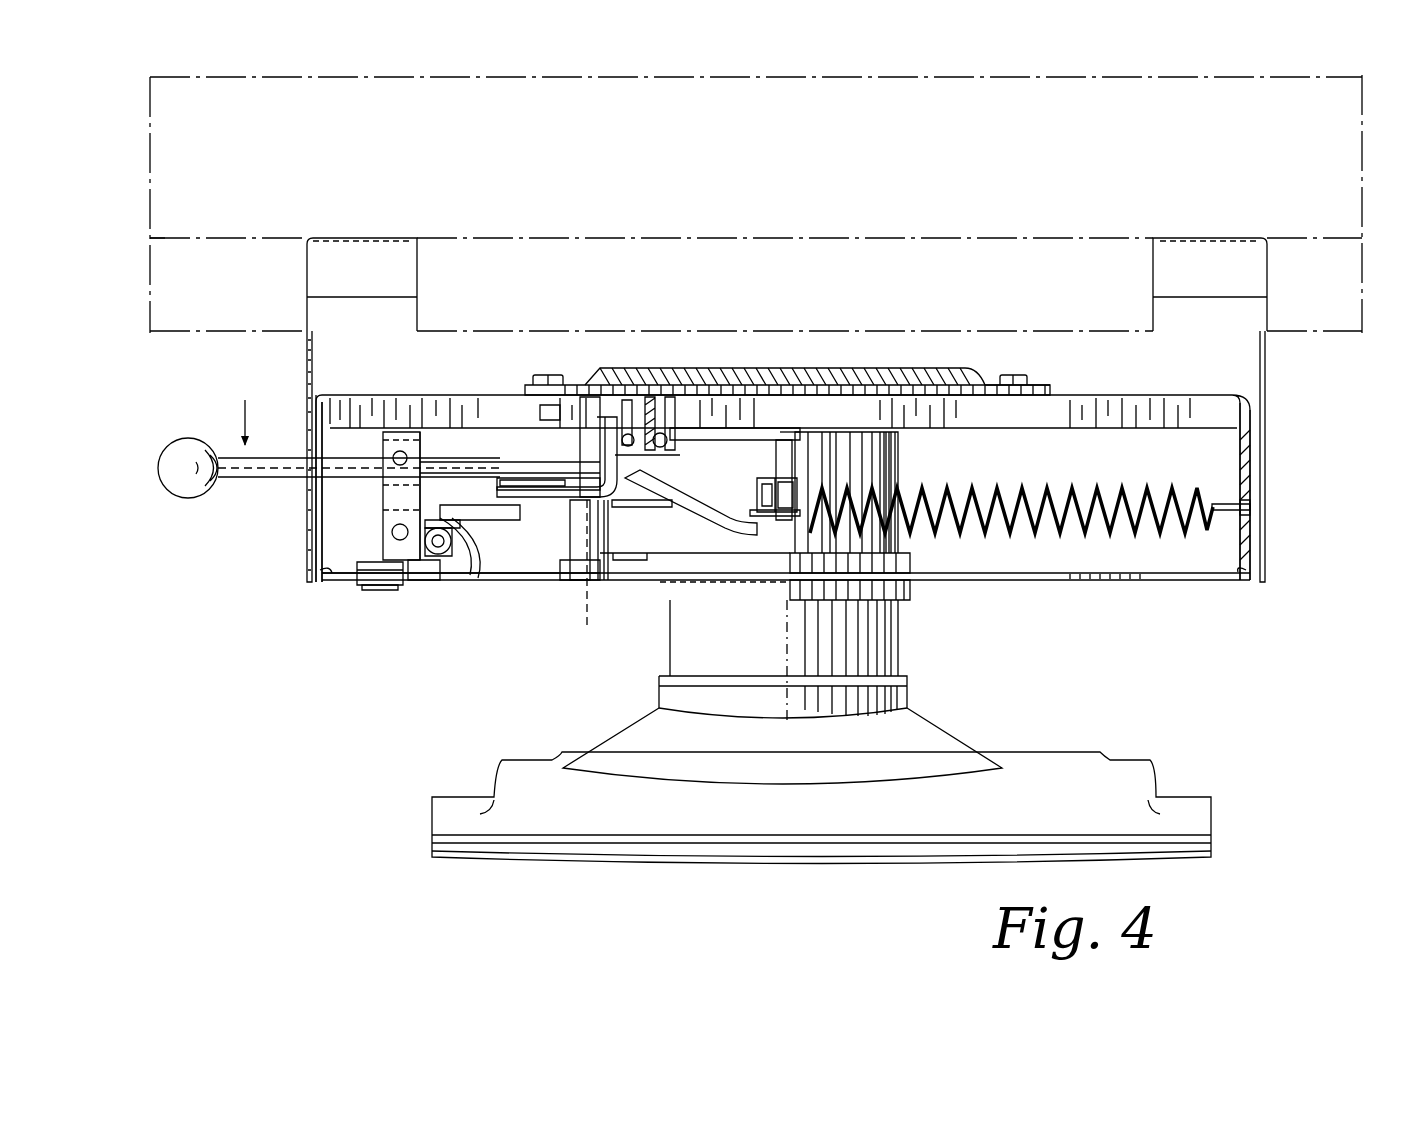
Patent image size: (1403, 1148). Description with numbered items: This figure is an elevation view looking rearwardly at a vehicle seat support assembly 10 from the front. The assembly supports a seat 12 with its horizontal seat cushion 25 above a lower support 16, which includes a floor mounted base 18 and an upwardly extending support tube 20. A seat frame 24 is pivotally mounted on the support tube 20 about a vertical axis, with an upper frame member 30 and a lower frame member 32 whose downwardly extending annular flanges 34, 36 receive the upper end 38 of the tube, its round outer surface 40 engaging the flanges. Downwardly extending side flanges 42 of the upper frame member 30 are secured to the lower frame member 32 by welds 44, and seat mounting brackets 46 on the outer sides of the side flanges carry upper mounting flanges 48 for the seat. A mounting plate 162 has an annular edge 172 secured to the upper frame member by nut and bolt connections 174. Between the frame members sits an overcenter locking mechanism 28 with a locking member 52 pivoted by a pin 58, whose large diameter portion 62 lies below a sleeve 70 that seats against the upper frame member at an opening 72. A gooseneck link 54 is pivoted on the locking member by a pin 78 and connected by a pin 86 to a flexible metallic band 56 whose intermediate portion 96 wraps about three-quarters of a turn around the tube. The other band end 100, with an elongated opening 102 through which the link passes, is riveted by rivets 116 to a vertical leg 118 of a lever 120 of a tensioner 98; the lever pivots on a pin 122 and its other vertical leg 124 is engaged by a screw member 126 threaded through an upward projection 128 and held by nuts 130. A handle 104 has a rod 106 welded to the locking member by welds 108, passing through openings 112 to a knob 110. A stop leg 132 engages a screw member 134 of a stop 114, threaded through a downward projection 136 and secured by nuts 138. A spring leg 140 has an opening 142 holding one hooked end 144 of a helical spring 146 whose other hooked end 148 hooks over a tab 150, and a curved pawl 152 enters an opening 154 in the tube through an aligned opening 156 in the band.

The vehicle seat support assembly 10 is at (272, 608).
The seat 12 is at (150, 147).
The lower support 16 is at (630, 716).
The base 18 is at (552, 772).
The support tube 20 is at (900, 640).
The seat frame 24 is at (1270, 430).
The seat cushion 25 is at (150, 215).
The overcenter locking mechanism 28 is at (540, 566).
The upper frame member 30 is at (1180, 405).
The lower frame member 32 is at (1092, 580).
The annular flange 34 is at (665, 420).
The annular flange 36 is at (912, 595).
The upper end 38 is at (900, 436).
The outer surface 40 is at (818, 432).
The side flanges 42 is at (316, 494).
The welds 44 is at (325, 582).
The seat mounting brackets 46 is at (307, 372).
The upper mounting flanges 48 is at (408, 243).
The locking member 52 is at (552, 512).
The gooseneck link 54 is at (600, 505).
The band 56 is at (830, 456).
The pin 58 is at (604, 566).
The large diameter portion 62 is at (570, 565).
The sleeve 70 is at (560, 430).
The opening 72 is at (640, 556).
The pin 78 is at (598, 432).
The pin 86 is at (630, 507).
The intermediate portion 96 is at (886, 466).
The tensioner 98 is at (455, 518).
The band end 100 is at (430, 498).
The elongated opening 102 is at (530, 492).
The handle 104 is at (225, 417).
The rod 106 is at (262, 457).
The welds 108 is at (510, 480).
The knob 110 is at (192, 495).
The openings 112 is at (320, 456).
The stop 114 is at (670, 452).
The rivets 116 is at (392, 530).
The vertical leg 118 is at (422, 495).
The lever 120 is at (360, 562).
The pin 122 is at (372, 590).
The vertical leg 124 is at (420, 580).
The screw member 126 is at (462, 560).
The upward projection 128 is at (460, 528).
The nuts 130 is at (436, 556).
The stop leg 132 is at (628, 400).
The screw member 134 is at (650, 397).
The downward projection 136 is at (670, 397).
The nuts 138 is at (660, 447).
The spring leg 140 is at (720, 535).
The opening 142 is at (760, 498).
The hooked end 144 is at (762, 516).
The helical spring 146 is at (1102, 470).
The hooked end 148 is at (1252, 507).
The tab 150 is at (1252, 512).
The pawl 152 is at (784, 475).
The opening 154 is at (767, 484).
The opening 156 is at (778, 492).
The mounting plate 162 is at (925, 365).
The annular edge 172 is at (1045, 385).
The nut and bolt connections 174 is at (548, 375).